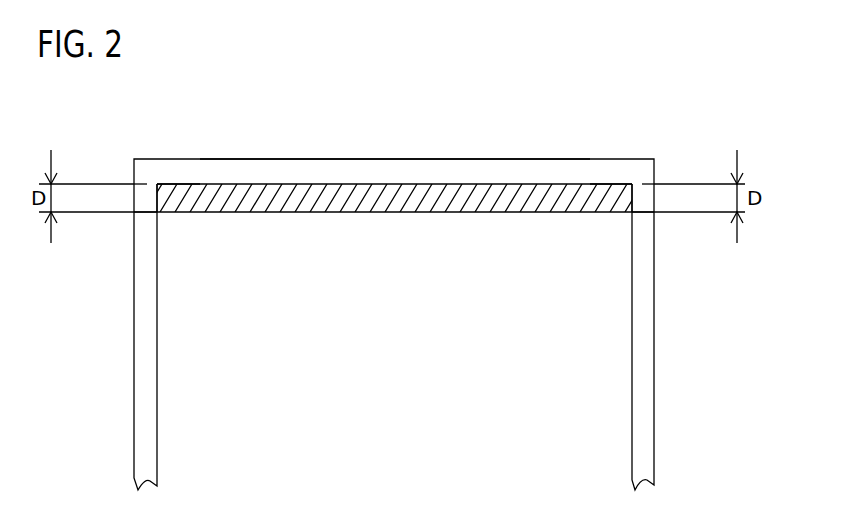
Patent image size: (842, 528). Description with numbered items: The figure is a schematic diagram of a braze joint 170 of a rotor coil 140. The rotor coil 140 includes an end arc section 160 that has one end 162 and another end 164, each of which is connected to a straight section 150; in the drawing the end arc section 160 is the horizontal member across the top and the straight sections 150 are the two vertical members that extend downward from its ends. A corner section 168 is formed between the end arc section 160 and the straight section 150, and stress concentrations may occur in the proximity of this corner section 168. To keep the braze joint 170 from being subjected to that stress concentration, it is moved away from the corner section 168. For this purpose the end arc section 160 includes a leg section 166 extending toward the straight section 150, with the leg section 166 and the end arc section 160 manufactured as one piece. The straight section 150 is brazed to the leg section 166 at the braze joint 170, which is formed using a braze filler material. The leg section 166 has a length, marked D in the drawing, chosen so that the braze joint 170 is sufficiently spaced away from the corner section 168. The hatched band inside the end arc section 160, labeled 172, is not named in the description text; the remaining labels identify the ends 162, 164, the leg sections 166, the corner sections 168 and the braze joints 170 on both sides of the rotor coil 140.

The rotor coil 140 is at (457, 157).
The straight section 150 is at (147, 333).
The end arc section 160 is at (356, 172).
The one end 162 is at (149, 157).
The another end 164 is at (645, 157).
The leg section 166 is at (145, 197).
The corner section 168 is at (160, 186).
The braze joint 170 is at (147, 212).
The insert 172 is at (377, 200).